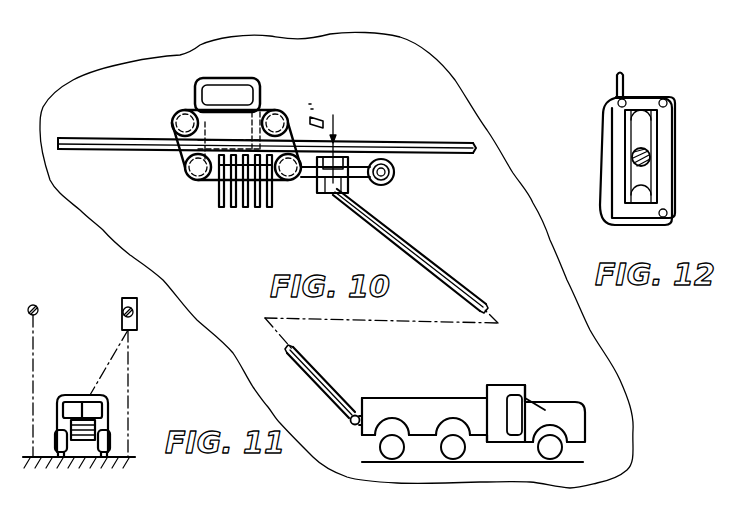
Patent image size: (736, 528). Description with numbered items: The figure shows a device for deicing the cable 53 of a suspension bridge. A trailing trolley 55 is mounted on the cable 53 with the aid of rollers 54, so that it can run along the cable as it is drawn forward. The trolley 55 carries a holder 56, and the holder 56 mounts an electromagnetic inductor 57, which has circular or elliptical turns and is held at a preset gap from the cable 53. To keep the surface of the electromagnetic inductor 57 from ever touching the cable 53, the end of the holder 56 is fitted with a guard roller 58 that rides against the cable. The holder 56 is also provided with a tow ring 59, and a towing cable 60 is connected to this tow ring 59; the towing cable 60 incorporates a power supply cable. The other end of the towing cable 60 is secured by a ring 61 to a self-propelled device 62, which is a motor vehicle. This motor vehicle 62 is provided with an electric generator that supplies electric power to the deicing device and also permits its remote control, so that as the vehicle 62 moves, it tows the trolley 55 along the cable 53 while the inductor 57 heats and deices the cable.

In FIG. 10, the cable 53 is at (437, 143).
In FIG. 11, the cable 53 is at (120, 309).
In FIG. 12, the cable 53 is at (651, 157).
In FIG. 10, the rollers 54 is at (176, 111).
In FIG. 12, the rollers 54 is at (641, 107).
In FIG. 10, the trailing trolley 55 is at (173, 125).
In FIG. 12, the trailing trolley 55 is at (613, 125).
In FIG. 10, the holder 56 is at (306, 178).
In FIG. 10, the electromagnetic inductor 57 is at (343, 152).
In FIG. 11, the electromagnetic inductor 57 is at (137, 323).
In FIG. 10, the guard roller 58 is at (395, 177).
In FIG. 10, the tow ring 59 is at (329, 195).
In FIG. 10, the towing cable 60 is at (420, 260).
In FIG. 11, the towing cable 60 is at (112, 362).
In FIG. 10, the ring 61 is at (352, 424).
In FIG. 10, the self-propelled device 62 is at (537, 400).
In FIG. 11, the self-propelled device 62 is at (109, 425).